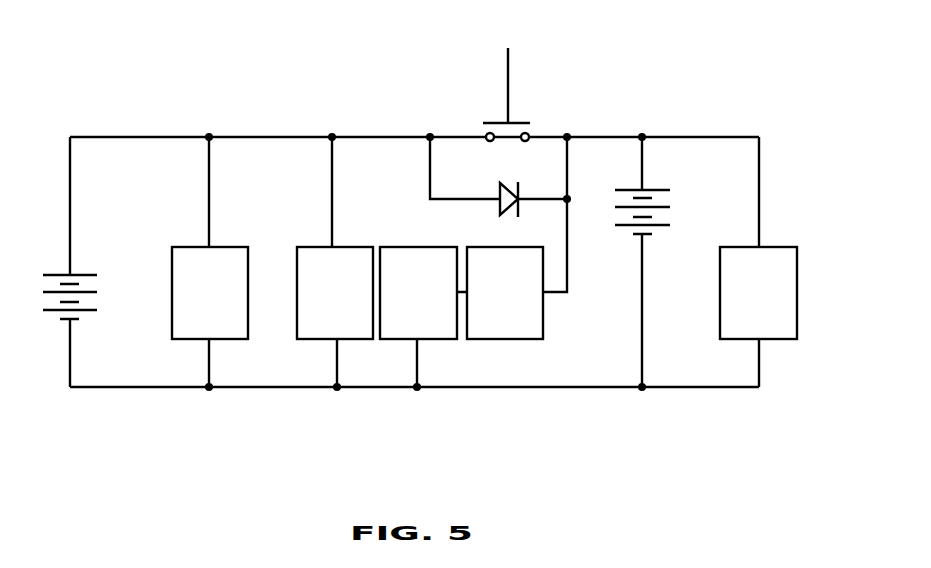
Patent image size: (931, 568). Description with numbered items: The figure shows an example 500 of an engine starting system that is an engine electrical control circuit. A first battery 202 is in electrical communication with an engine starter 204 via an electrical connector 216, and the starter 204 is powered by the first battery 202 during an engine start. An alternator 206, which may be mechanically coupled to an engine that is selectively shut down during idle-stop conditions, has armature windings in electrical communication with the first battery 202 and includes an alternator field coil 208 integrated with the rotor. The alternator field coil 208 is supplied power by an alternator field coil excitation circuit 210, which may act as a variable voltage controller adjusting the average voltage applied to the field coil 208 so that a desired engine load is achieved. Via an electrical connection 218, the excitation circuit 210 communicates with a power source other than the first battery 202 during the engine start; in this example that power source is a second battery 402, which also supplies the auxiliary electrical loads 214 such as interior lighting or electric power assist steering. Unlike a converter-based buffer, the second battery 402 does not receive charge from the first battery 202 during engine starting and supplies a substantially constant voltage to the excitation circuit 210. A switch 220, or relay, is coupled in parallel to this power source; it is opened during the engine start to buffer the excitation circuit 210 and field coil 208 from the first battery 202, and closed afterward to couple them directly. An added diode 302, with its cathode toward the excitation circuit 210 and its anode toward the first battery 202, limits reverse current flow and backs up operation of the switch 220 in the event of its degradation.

The engine starting system example 500 is at (732, 28).
The first battery 202 is at (78, 275).
The engine starter 204 is at (210, 262).
The alternator 206 is at (335, 262).
The alternator field coil 208 is at (423, 319).
The alternator field coil excitation circuit 210 is at (505, 293).
The auxiliary electrical loads 214 is at (758, 293).
The electrical connector 216 is at (156, 137).
The electrical connection 218 is at (567, 285).
The switch 220 is at (508, 105).
The diode 302 is at (508, 178).
The second battery 402 is at (650, 190).